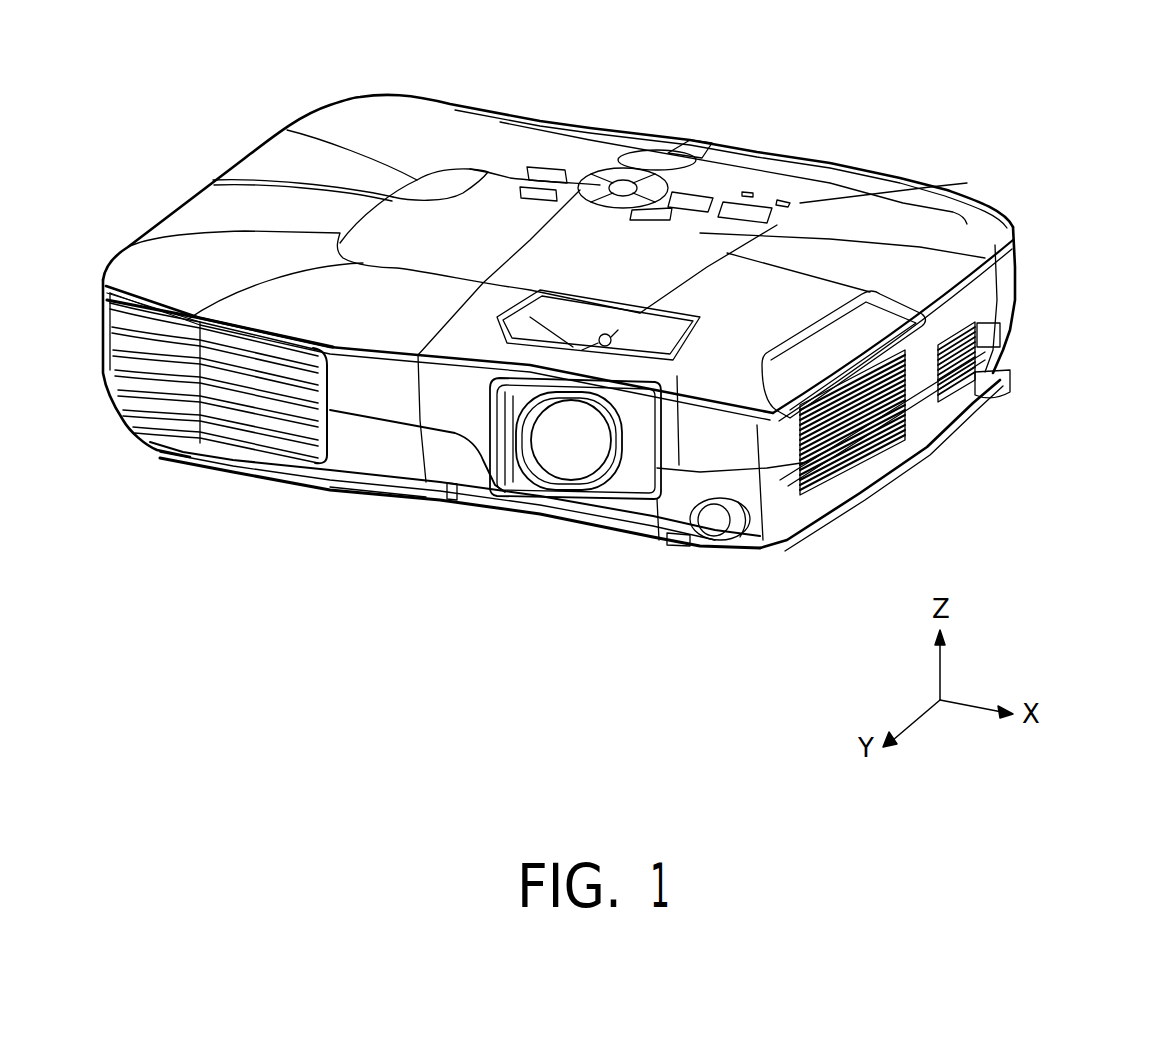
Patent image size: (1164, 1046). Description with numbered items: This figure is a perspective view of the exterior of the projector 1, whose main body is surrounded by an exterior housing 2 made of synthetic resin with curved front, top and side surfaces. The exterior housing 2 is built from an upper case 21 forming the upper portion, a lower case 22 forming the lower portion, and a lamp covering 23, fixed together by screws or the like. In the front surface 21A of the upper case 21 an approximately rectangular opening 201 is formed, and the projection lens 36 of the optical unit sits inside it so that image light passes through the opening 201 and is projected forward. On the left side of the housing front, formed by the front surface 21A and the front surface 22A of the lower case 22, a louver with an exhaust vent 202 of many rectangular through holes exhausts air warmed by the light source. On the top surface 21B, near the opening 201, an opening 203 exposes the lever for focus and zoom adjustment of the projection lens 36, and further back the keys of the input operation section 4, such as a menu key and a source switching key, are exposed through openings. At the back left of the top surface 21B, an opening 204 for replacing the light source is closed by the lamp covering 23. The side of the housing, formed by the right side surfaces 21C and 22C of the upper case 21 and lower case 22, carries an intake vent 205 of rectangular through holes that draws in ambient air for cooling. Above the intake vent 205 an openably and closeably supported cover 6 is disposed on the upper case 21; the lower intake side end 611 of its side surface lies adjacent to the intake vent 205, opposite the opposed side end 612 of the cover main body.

The projector 1 is at (835, 94).
The exterior housing 2 is at (1031, 233).
The input operation section 4 is at (705, 185).
The cover 6 is at (887, 317).
The upper case 21 is at (757, 473).
The front surface 21A is at (347, 393).
The top surface 21B is at (950, 223).
The right side surface 21C is at (1007, 317).
The lower case 22 is at (763, 527).
The front surface 22A is at (407, 470).
The right side surface 22C is at (923, 407).
The lamp covering 23 is at (387, 108).
The projection lens 36 is at (580, 477).
The opening 201 is at (583, 463).
The exhaust vent 202 is at (223, 423).
The opening 203 is at (657, 353).
The opening 204 is at (512, 143).
The intake vent 205 is at (880, 467).
The intake side end 611 is at (947, 387).
The opposed side end 612 is at (838, 307).